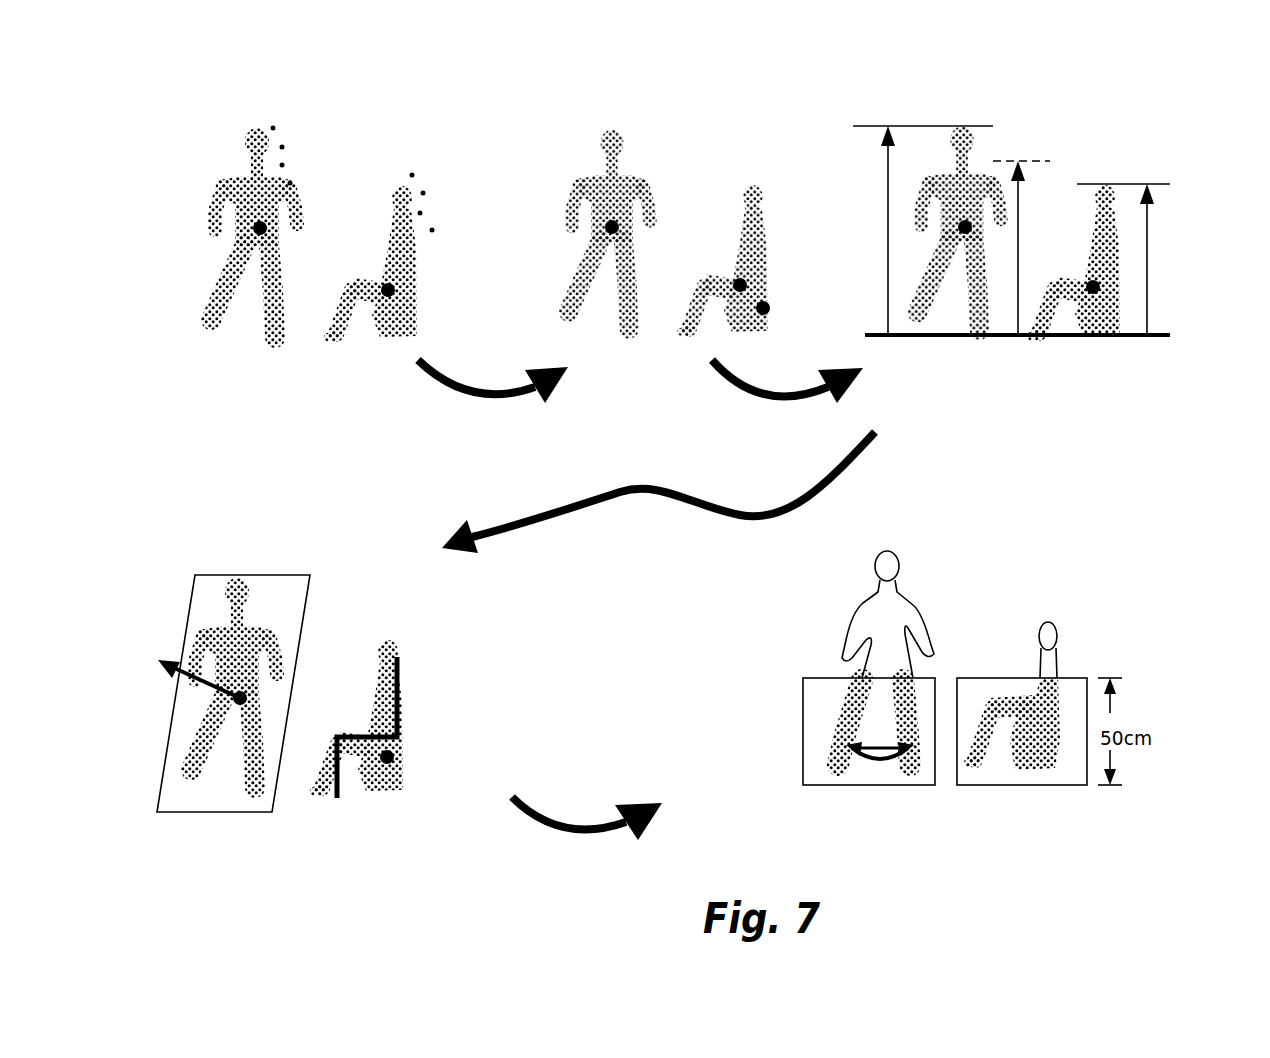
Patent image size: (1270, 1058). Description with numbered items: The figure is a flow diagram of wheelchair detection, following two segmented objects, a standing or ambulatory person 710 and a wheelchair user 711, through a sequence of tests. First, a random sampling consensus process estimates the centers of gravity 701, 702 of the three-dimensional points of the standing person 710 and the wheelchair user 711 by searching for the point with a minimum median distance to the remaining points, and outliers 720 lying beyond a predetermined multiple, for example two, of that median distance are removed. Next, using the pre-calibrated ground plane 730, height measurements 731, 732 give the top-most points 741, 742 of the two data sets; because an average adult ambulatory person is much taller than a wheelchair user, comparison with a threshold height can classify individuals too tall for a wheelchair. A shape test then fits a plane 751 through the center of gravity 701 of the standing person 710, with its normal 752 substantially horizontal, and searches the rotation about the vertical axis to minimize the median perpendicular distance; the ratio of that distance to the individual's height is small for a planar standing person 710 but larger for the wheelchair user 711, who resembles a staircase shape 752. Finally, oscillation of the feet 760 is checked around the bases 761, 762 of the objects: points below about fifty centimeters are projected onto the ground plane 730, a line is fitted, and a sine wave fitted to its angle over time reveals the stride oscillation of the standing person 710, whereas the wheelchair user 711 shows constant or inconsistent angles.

The center of gravity 701 is at (245, 236).
The center of gravity 702 is at (382, 292).
The standing or ambulatory person 710 is at (253, 148).
The wheelchair user 711 is at (397, 202).
The outliers 720 is at (418, 163).
The ground plane 730 is at (993, 340).
The height measurement 731 is at (887, 228).
The height measurement 732 is at (1030, 160).
The top-most point 741 is at (935, 125).
The top-most point 742 is at (1097, 183).
The plane 751 is at (217, 583).
The normal 752 is at (160, 660).
The feet 760 is at (865, 785).
The base 761 is at (837, 785).
The base 762 is at (1057, 785).